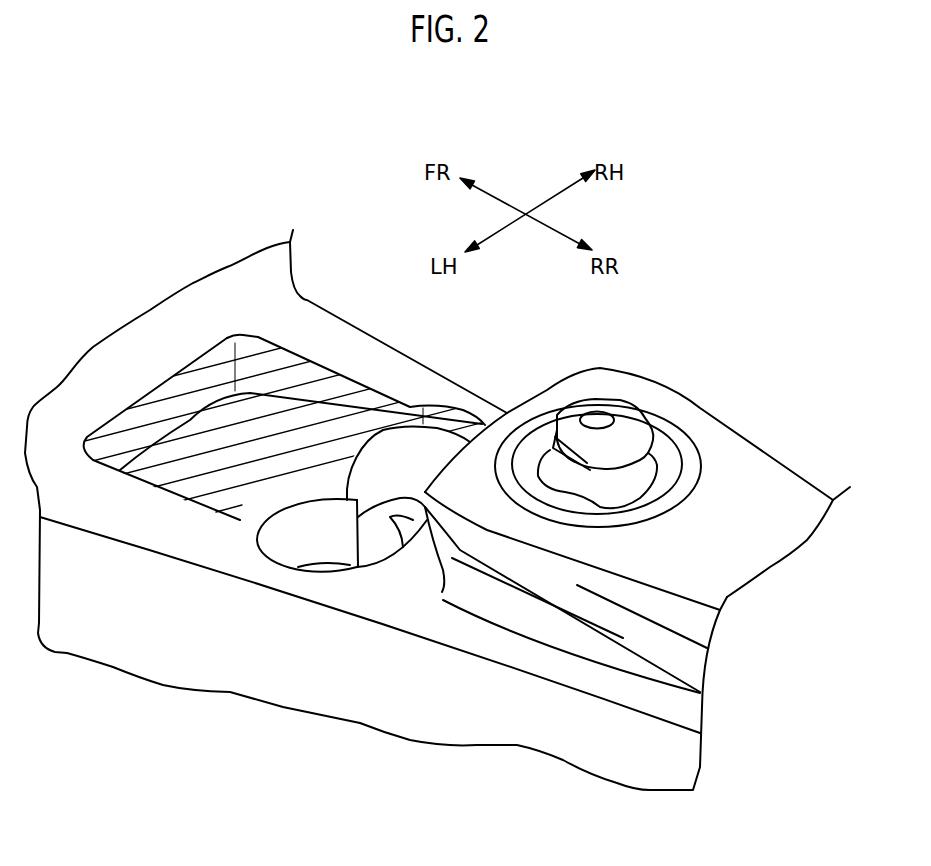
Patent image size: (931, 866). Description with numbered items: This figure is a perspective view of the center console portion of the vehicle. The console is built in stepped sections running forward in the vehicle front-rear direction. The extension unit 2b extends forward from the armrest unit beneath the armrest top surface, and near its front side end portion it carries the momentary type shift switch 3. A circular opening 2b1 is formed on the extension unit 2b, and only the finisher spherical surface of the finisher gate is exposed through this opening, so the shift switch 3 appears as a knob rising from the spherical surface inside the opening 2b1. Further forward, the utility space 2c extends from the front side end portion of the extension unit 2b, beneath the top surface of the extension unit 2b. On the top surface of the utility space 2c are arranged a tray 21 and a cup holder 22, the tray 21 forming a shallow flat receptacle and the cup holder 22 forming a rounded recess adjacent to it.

The utility space 2c is at (300, 326).
The tray 21 is at (300, 417).
The cup holder 22 is at (383, 455).
The extension unit 2b is at (759, 472).
The circular opening 2b1 is at (678, 443).
The momentary type shift switch 3 is at (608, 381).